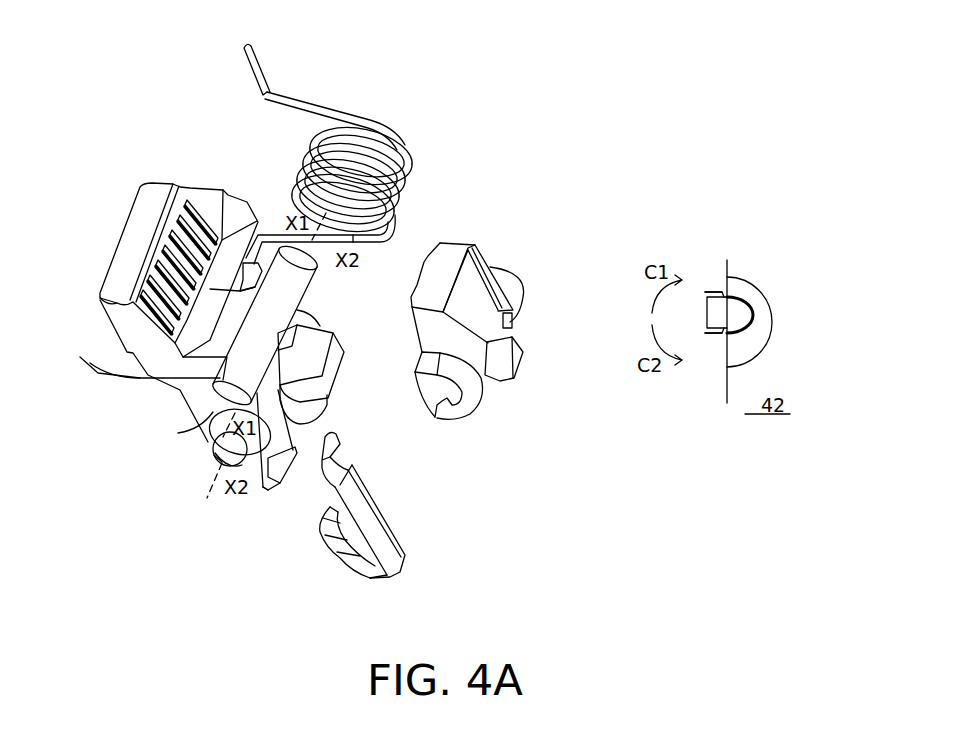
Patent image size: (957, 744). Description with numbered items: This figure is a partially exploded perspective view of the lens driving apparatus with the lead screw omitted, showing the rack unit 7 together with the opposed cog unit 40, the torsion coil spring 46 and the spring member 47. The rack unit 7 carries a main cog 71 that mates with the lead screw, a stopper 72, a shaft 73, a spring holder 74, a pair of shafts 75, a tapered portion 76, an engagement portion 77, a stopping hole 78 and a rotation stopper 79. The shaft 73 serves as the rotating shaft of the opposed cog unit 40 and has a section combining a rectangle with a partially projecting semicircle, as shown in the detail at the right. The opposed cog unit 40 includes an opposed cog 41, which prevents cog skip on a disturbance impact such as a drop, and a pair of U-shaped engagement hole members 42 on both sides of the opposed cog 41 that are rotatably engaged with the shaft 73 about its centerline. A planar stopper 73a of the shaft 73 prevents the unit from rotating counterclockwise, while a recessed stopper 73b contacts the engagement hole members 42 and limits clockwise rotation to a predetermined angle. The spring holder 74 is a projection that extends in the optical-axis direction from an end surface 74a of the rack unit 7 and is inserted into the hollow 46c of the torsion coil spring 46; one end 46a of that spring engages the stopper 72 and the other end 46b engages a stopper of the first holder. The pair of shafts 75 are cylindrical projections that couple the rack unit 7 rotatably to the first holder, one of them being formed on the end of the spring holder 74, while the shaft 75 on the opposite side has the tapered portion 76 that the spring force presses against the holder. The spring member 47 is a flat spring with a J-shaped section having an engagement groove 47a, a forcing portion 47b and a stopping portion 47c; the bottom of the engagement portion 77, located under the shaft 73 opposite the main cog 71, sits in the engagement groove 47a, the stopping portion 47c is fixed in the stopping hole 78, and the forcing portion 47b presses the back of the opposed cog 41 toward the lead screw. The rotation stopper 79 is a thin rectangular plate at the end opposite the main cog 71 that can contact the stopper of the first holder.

The rack unit 7 is at (141, 207).
The stopper 72 is at (207, 194).
The main cog 71 is at (100, 303).
The stopper 73a is at (80, 357).
The shaft 73 is at (178, 433).
The recessed stopper 73b is at (713, 340).
The tapered portion 76 is at (212, 440).
The shaft 75 is at (210, 462).
The rotation stopper 79 is at (260, 490).
The spring holder 74 is at (313, 287).
The end surface 74a is at (317, 327).
The engagement portion 77 is at (328, 373).
The stopping hole 78 is at (310, 427).
The torsion coil spring 46 is at (375, 155).
The one end 46a is at (255, 57).
The other end 46b is at (323, 273).
The hollow 46c is at (393, 130).
The opposed cog unit 40 is at (504, 313).
The opposed cog 41 is at (440, 333).
The engagement hole member 42 is at (517, 288).
The spring member 47 is at (402, 524).
The engagement groove 47a is at (368, 580).
The forcing portion 47b is at (337, 462).
The stopping portion 47c is at (322, 537).